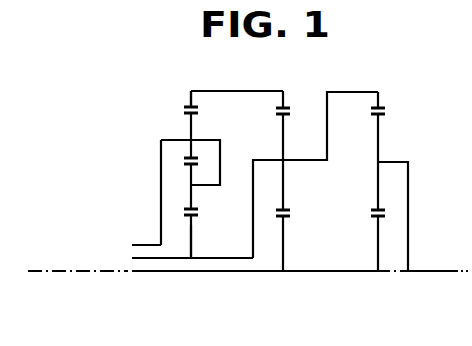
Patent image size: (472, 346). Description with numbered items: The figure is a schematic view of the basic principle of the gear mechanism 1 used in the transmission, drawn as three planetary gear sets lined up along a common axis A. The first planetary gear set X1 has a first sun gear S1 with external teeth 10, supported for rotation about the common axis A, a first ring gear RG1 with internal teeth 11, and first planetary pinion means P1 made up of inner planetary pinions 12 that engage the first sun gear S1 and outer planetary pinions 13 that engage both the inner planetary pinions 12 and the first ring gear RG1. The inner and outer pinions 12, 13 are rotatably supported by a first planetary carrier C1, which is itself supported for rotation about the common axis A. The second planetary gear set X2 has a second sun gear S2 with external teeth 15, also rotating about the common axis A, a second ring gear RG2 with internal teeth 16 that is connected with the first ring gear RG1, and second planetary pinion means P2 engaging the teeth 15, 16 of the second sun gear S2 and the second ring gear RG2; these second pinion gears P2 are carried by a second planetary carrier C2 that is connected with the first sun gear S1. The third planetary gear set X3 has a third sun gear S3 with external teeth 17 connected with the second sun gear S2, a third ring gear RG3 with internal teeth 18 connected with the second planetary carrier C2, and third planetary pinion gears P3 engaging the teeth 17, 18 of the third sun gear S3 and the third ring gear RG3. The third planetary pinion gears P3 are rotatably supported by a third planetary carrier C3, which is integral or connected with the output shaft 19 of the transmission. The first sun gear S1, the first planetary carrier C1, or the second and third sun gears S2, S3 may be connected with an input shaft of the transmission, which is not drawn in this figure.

The gear mechanism 1 is at (248, 82).
The common axis A is at (108, 272).
The external teeth 10 is at (194, 218).
The internal teeth 11 is at (190, 100).
The inner planetary pinions 12 is at (193, 203).
The outer planetary pinions 13 is at (190, 127).
The external teeth 15 is at (289, 215).
The internal teeth 16 is at (289, 112).
The external teeth 17 is at (386, 213).
The internal teeth 18 is at (389, 113).
The output shaft 19 is at (425, 271).
The first ring gear RG1 is at (193, 90).
The second ring gear RG2 is at (284, 90).
The third ring gear RG3 is at (379, 91).
The first planetary carrier C1 is at (208, 186).
The second planetary carrier C2 is at (302, 153).
The third planetary carrier C3 is at (395, 162).
The first planetary pinion means P1 is at (178, 181).
The second planetary pinion means P2 is at (284, 182).
The third planetary pinion gears P3 is at (377, 130).
The first sun gear S1 is at (192, 245).
The second sun gear S2 is at (284, 248).
The third sun gear S3 is at (379, 252).
The first planetary gear set X1 is at (182, 238).
The second planetary gear set X2 is at (275, 239).
The third planetary gear set X3 is at (370, 239).